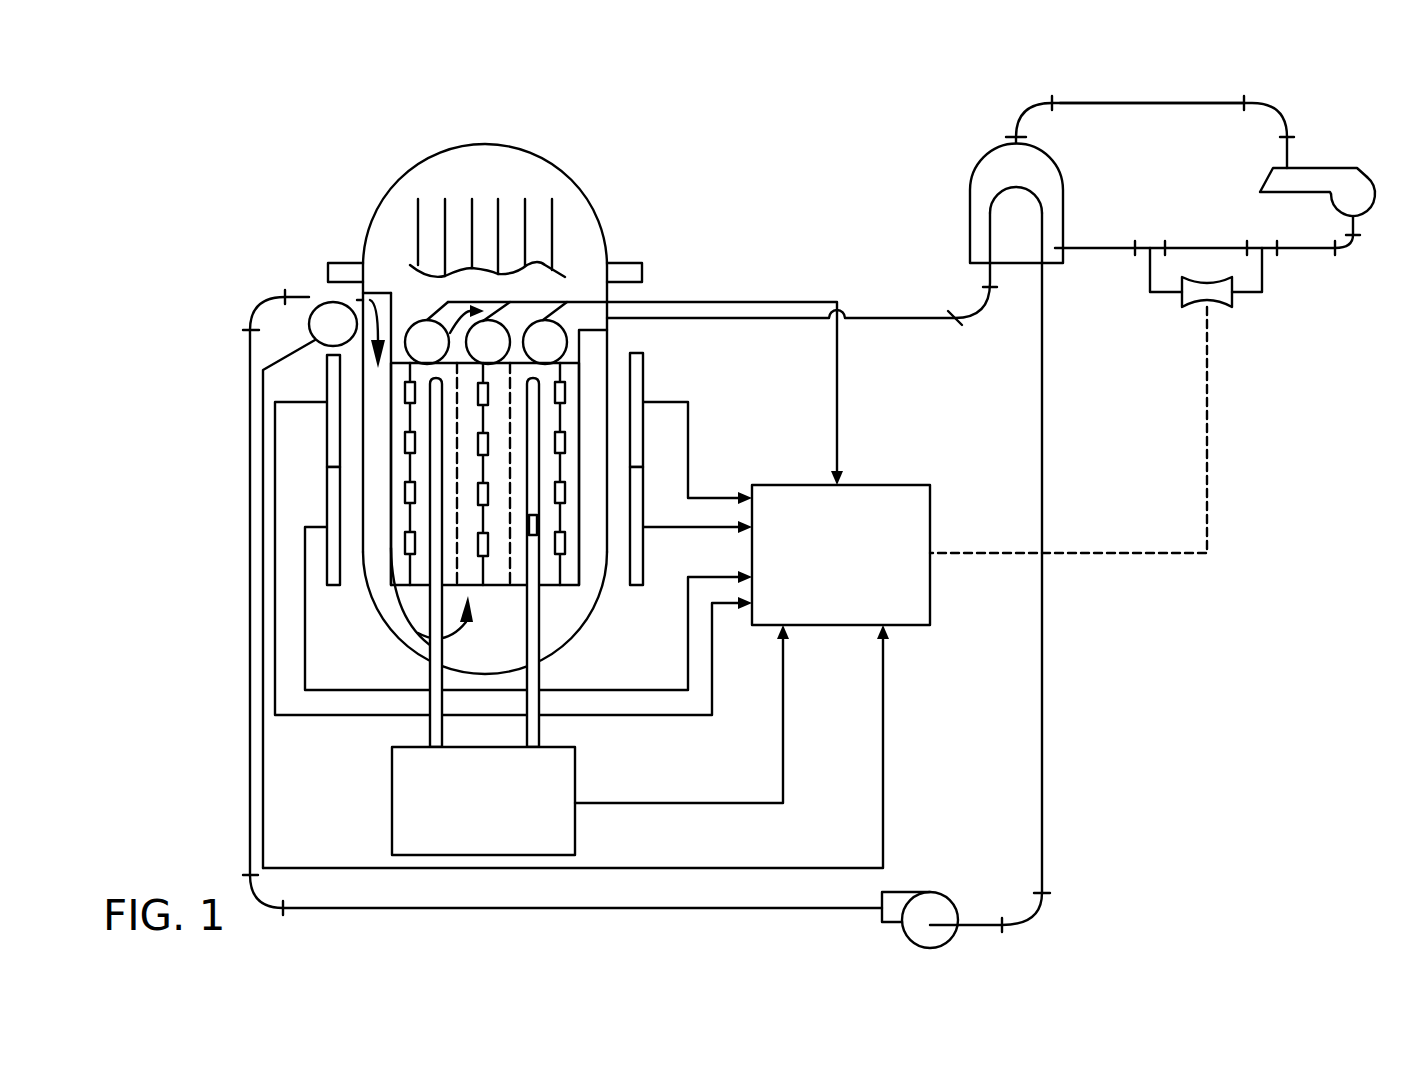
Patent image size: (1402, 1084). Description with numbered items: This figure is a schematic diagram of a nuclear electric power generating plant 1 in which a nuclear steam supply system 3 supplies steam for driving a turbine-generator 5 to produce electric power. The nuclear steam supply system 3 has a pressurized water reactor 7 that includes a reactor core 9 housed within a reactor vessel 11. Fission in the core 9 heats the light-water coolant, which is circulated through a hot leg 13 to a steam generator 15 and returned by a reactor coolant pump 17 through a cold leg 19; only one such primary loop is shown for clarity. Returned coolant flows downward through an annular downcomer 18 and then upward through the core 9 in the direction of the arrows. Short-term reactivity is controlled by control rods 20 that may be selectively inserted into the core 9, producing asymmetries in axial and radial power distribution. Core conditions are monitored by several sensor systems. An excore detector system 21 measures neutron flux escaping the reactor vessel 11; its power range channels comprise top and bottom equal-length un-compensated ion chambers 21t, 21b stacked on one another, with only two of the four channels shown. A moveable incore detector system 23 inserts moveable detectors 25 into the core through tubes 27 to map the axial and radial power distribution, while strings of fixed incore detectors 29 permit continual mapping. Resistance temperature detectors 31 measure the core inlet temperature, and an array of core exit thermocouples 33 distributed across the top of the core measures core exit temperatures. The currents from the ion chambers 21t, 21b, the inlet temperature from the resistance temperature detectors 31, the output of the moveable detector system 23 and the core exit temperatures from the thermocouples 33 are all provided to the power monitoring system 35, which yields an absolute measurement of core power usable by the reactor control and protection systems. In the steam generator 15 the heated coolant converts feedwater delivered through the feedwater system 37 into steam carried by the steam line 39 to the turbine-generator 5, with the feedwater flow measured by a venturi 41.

The nuclear electric power generating plant 1 is at (848, 205).
The nuclear steam supply system 3 is at (773, 200).
The turbine-generator 5 is at (1310, 168).
The pressurized water reactor 7 is at (636, 233).
The reactor core 9 is at (560, 587).
The reactor vessel 11 is at (403, 646).
The hot leg 13 is at (873, 318).
The steam generator 15 is at (977, 168).
The reactor coolant pump 17 is at (930, 893).
The annular downcomer 18 is at (377, 520).
The cold leg 19 is at (620, 895).
The control rods 20 is at (445, 243).
The excore detector system 21 is at (667, 362).
The top un-compensated ion chamber 21t is at (327, 392).
The bottom un-compensated ion chamber 21b is at (330, 512).
The moveable incore detector system 23 is at (572, 790).
The moveable detectors 25 is at (437, 413).
The tubes 27 is at (427, 723).
The fixed incore detectors 29 is at (400, 617).
The resistance temperature detectors 31 is at (308, 324).
The core exit thermocouples 33 is at (428, 320).
The power monitoring system 35 is at (875, 488).
The feedwater system 37 is at (1093, 247).
The steam line 39 is at (1107, 105).
The venturi 41 is at (1218, 298).